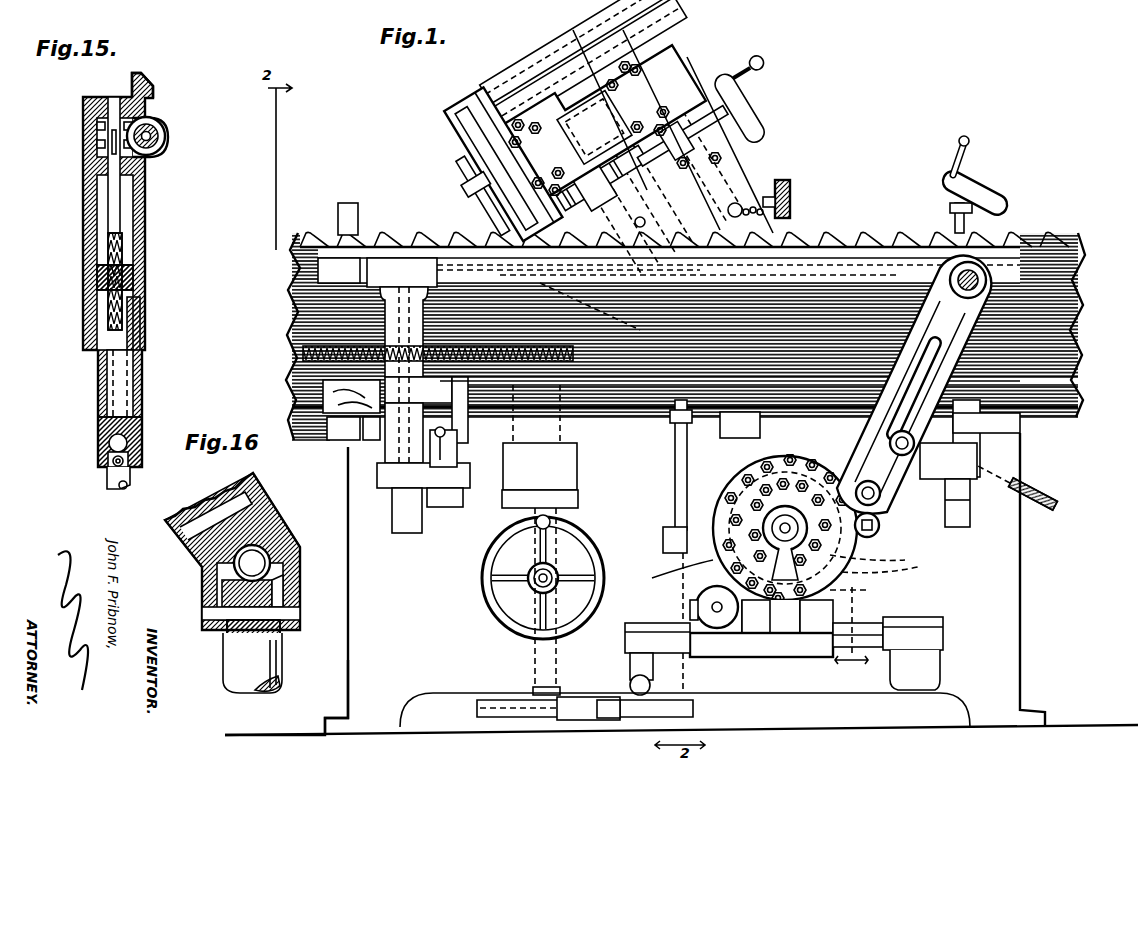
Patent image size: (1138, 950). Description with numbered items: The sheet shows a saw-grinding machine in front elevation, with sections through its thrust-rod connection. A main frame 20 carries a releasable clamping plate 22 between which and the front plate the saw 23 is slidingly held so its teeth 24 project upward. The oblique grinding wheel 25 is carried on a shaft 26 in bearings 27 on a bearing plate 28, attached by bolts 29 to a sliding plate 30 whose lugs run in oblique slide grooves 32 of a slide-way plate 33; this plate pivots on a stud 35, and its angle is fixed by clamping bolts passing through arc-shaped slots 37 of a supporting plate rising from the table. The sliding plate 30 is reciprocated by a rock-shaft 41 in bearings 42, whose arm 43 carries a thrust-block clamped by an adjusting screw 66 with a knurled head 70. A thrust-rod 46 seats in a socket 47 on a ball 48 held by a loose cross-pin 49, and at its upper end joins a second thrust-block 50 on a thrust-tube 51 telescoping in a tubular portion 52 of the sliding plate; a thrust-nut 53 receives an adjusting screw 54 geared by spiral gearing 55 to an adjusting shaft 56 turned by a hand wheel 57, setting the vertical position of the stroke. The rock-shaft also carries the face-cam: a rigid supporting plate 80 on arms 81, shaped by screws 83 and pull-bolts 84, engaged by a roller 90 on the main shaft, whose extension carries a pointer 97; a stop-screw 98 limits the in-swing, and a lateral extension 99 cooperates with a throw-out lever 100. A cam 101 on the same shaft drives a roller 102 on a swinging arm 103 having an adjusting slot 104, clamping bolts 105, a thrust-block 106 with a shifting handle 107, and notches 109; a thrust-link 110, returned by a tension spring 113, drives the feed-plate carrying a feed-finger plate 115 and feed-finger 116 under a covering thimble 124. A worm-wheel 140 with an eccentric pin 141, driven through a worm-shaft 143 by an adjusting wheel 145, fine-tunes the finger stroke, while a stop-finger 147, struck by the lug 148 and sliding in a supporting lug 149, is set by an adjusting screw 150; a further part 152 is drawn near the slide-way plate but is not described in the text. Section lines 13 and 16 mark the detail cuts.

In FIG. 1, the section line 13 is at (851, 666).
In FIG. 15, the section line 16 is at (116, 417).
In FIG. 16, the main frame 20 is at (348, 712).
In FIG. 1, the main frame 20 is at (1020, 592).
In FIG. 1, the clamping plate 22 is at (1020, 238).
In FIG. 1, the saw 23 is at (300, 290).
In FIG. 1, the teeth 24 is at (866, 238).
In FIG. 1, the grinding wheel 25 is at (503, 164).
In FIG. 1, the carrying shaft 26 is at (482, 196).
In FIG. 1, the bearings 27 is at (602, 114).
In FIG. 1, the bearing plate 28 is at (578, 71).
In FIG. 1, the bolts 29 is at (660, 80).
In FIG. 15, the sliding plate 30 is at (145, 235).
In FIG. 1, the sliding plate 30 is at (644, 158).
In FIG. 1, the slide grooves 32 is at (571, 52).
In FIG. 1, the slide-way plate 33 is at (775, 195).
In FIG. 1, the pivot stud 35 is at (586, 298).
In FIG. 1, the arc-shaped slots 37 is at (705, 166).
In FIG. 1, the rock-shaft 41 is at (788, 660).
In FIG. 1, the bearings 42 is at (645, 623).
In FIG. 1, the arm 43 is at (722, 657).
In FIG. 15, the thrust-rod 46 is at (131, 485).
In FIG. 16, the thrust-rod 46 is at (283, 672).
In FIG. 16, the socket 47 is at (285, 596).
In FIG. 15, the ball 48 is at (100, 448).
In FIG. 16, the ball 48 is at (258, 565).
In FIG. 15, the cross-pin 49 is at (108, 464).
In FIG. 16, the cross-pin 49 is at (296, 614).
In FIG. 15, the second thrust-block 50 is at (142, 432).
In FIG. 16, the second thrust-block 50 is at (268, 518).
In FIG. 1, the second thrust-block 50 is at (662, 192).
In FIG. 15, the thrust-tube 51 is at (100, 382).
In FIG. 1, the thrust-tube 51 is at (645, 203).
In FIG. 15, the tubular portion 52 is at (103, 215).
In FIG. 1, the tubular portion 52 is at (646, 220).
In FIG. 15, the thrust-nut 53 is at (140, 277).
In FIG. 15, the adjusting screw 54 is at (118, 208).
In FIG. 1, the adjusting screw 54 is at (627, 213).
In FIG. 15, the spiral gearing 55 is at (165, 135).
In FIG. 1, the spiral gearing 55 is at (610, 224).
In FIG. 15, the adjusting shaft 56 is at (152, 112).
In FIG. 1, the adjusting shaft 56 is at (676, 140).
In FIG. 1, the hand wheel 57 is at (754, 99).
In FIG. 1, the adjusting screw 66 is at (690, 607).
In FIG. 1, the knurled adjusting head 70 is at (710, 600).
In FIG. 1, the supporting plate 80 is at (880, 567).
In FIG. 1, the arms 81 is at (762, 657).
In FIG. 1, the screws 83 is at (663, 533).
In FIG. 1, the pull-bolts 84 is at (770, 470).
In FIG. 1, the roller 90 is at (850, 590).
In FIG. 1, the pointer 97 is at (880, 592).
In FIG. 1, the stop-screw 98 is at (880, 535).
In FIG. 1, the lateral extension 99 is at (670, 575).
In FIG. 1, the throw-out lever 100 is at (675, 500).
In FIG. 1, the cam 101 is at (725, 600).
In FIG. 1, the roller 102 is at (909, 569).
In FIG. 1, the swinging arm 103 is at (1000, 417).
In FIG. 1, the adjusting slot 104 is at (1075, 330).
In FIG. 1, the clamping bolts 105 is at (880, 523).
In FIG. 1, the thrust-block 106 is at (800, 410).
In FIG. 1, the shifting handle 107 is at (1040, 488).
In FIG. 1, the notches 109 is at (695, 277).
In FIG. 1, the thrust-link 110 is at (690, 442).
In FIG. 1, the tension spring 113 is at (505, 418).
In FIG. 1, the feed-finger plate 115 is at (378, 240).
In FIG. 1, the feed-finger 116 is at (568, 278).
In FIG. 1, the covering thimble 124 is at (348, 203).
In FIG. 1, the worm-wheel 140 is at (960, 480).
In FIG. 1, the eccentric pin 141 is at (965, 520).
In FIG. 1, the worm-shaft 143 is at (952, 215).
In FIG. 1, the adjusting wheel 145 is at (985, 188).
In FIG. 1, the stop-finger 147 is at (418, 240).
In FIG. 1, the lug 148 is at (321, 247).
In FIG. 1, the supporting lug 149 is at (660, 420).
In FIG. 1, the adjusting screw 150 is at (724, 212).
In FIG. 1, the screw 152 is at (792, 212).